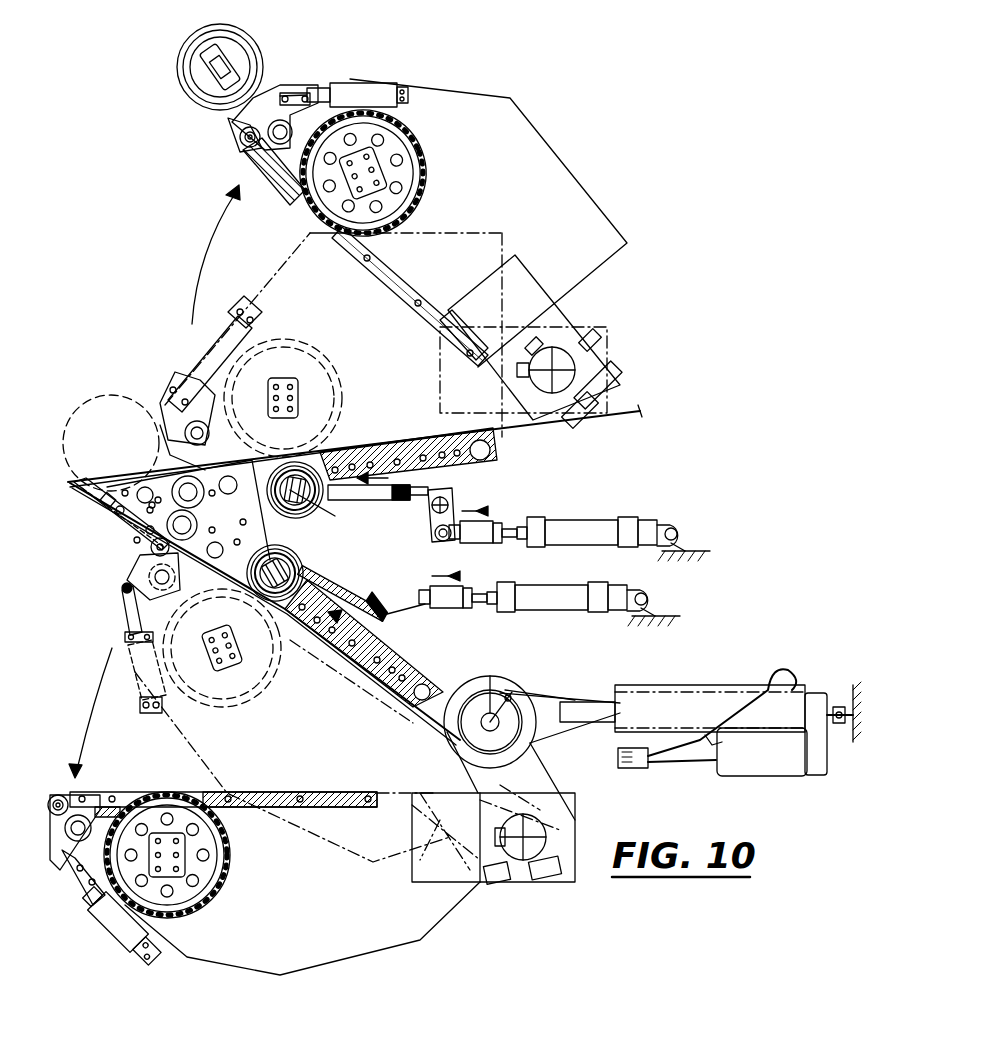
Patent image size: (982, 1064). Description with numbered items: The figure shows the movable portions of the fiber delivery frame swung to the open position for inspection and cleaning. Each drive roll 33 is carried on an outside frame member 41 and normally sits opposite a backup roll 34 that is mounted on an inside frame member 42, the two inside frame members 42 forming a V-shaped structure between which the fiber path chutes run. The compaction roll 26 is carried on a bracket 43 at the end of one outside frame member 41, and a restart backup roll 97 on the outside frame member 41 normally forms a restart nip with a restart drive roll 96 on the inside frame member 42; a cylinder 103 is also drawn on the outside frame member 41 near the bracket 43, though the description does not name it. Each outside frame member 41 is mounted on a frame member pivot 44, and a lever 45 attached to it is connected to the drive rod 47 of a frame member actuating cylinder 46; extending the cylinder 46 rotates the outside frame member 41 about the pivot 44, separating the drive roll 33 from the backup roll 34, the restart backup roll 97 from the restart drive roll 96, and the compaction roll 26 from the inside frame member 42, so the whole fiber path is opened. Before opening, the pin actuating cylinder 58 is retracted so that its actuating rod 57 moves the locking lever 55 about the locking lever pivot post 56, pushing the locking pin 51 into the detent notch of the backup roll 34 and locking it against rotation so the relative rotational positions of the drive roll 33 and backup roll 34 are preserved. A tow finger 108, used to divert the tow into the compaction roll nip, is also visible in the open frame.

The compaction roll 26 is at (212, 42).
The bracket 43 is at (268, 92).
The cylinder 103 is at (385, 90).
The restart backup roll 97 is at (236, 145).
The drive roll 33 is at (425, 200).
The outside frame member 41 is at (405, 285).
The frame member pivot 44 is at (568, 360).
The inside frame member 42 is at (500, 457).
The locking lever pivot post 56 is at (452, 498).
The locking lever 55 is at (428, 530).
The actuating rod 57 is at (503, 525).
The pin actuating cylinder 58 is at (598, 528).
The restart drive roll 96 is at (188, 525).
The backup roll 34 is at (300, 518).
The tow finger 108 is at (88, 487).
The locking pin 51 is at (332, 600).
The drive rod 47 is at (540, 687).
The frame member actuating cylinder 46 is at (694, 700).
The lever 45 is at (486, 784).